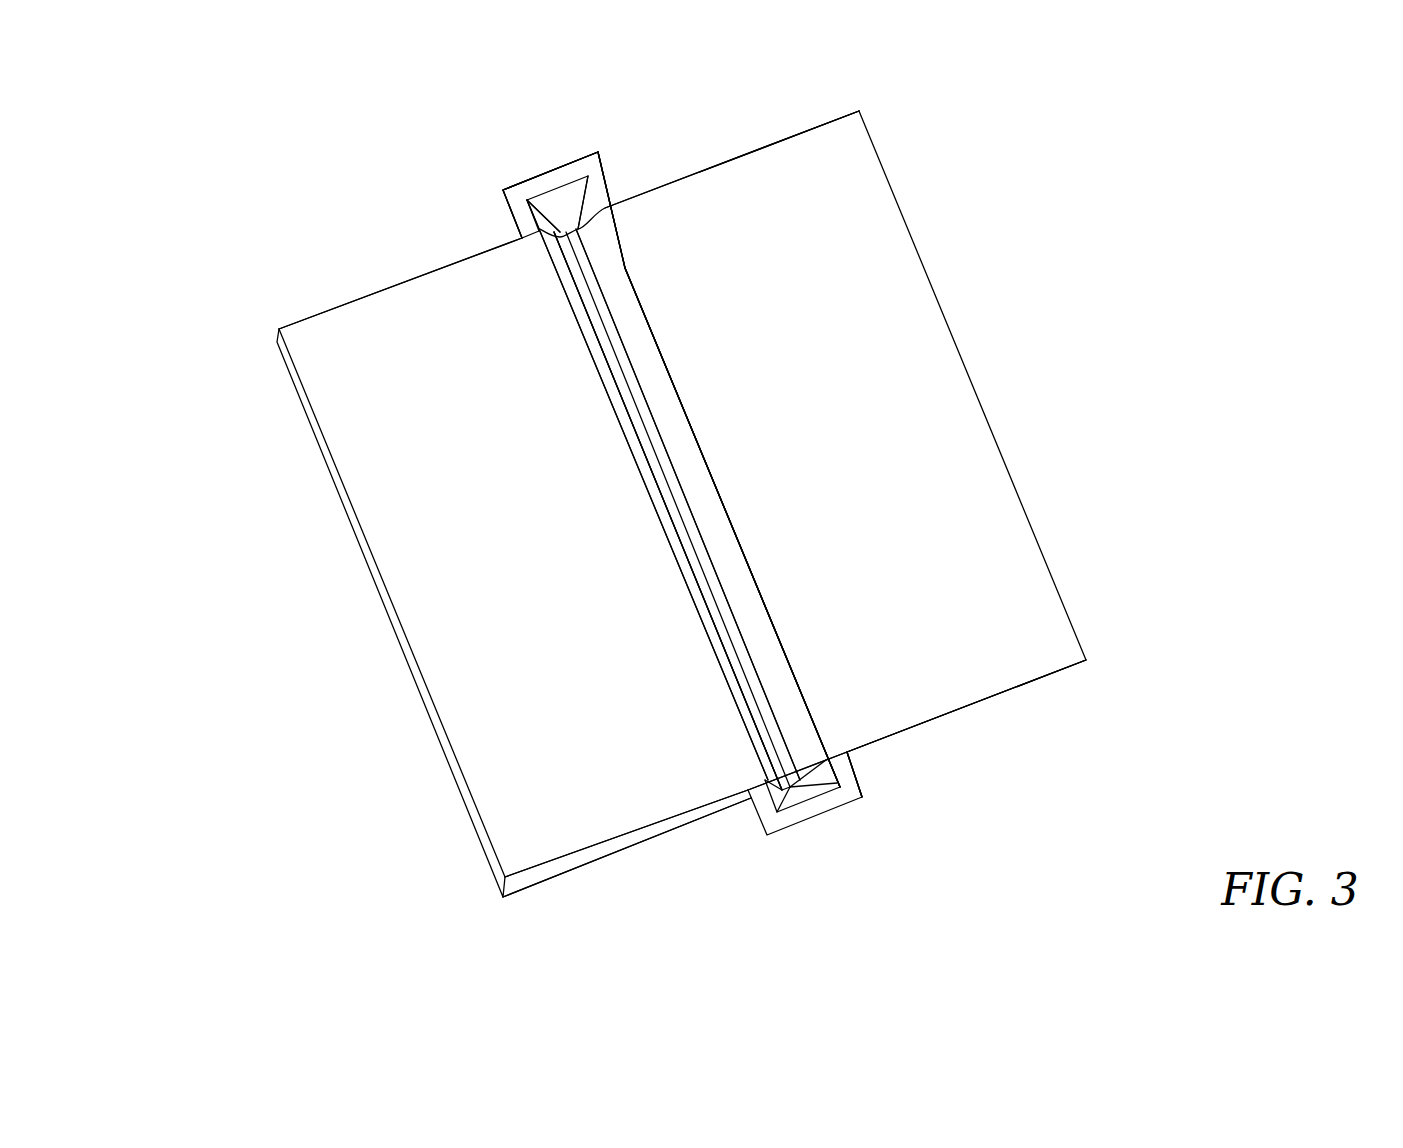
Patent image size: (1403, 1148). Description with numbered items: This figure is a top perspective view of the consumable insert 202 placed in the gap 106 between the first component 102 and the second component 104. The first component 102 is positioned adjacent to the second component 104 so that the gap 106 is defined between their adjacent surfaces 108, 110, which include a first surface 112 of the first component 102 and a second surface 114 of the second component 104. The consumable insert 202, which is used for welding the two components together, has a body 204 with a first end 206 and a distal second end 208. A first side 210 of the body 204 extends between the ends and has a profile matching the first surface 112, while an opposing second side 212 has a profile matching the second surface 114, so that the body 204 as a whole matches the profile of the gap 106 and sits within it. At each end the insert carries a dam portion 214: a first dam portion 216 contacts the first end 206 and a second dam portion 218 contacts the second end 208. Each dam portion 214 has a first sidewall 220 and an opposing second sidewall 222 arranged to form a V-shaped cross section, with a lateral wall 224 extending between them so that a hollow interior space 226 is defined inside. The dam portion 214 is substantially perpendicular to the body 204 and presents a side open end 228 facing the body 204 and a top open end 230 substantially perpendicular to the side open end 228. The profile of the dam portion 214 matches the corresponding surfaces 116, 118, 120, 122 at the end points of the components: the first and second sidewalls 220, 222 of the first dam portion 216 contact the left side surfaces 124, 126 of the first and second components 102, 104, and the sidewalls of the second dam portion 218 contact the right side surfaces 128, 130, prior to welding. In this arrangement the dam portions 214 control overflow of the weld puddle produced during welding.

The first component 102 is at (500, 558).
The second component 104 is at (837, 443).
The gap 106 is at (799, 702).
The adjacent surface 108 is at (592, 397).
The adjacent surface 110 is at (700, 412).
The first surface 112 is at (740, 690).
The second surface 114 is at (765, 600).
The corresponding surface 116 is at (297, 308).
The corresponding surface 118 is at (746, 132).
The corresponding surface 120 is at (638, 844).
The corresponding surface 122 is at (1062, 686).
The left side surface 124 is at (368, 294).
The left side surface 126 is at (808, 130).
The right side surface 128 is at (690, 823).
The right side surface 130 is at (978, 702).
The consumable insert 202 is at (529, 147).
The body 204 is at (674, 487).
The first end 206 is at (454, 188).
The second end 208 is at (873, 826).
The first side 210 is at (688, 572).
The second side 212 is at (735, 530).
The dam portion 214 is at (626, 148).
The first dam portion 216 is at (636, 193).
The second dam portion 218 is at (889, 795).
The first sidewall 220 is at (511, 216).
The second sidewall 222 is at (610, 183).
The lateral wall 224 is at (562, 165).
The hollow interior space 226 is at (571, 221).
The side open end 228 is at (590, 238).
The top open end 230 is at (597, 135).